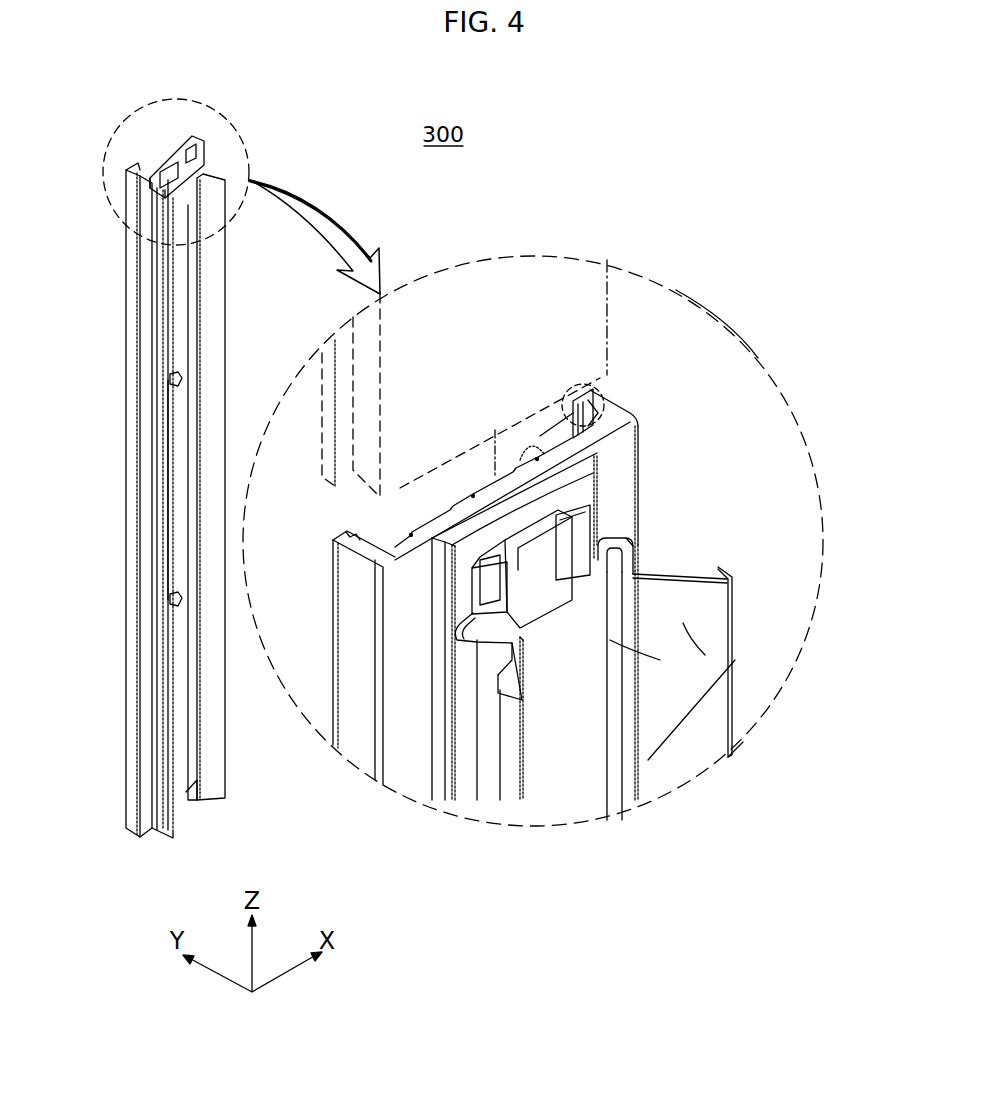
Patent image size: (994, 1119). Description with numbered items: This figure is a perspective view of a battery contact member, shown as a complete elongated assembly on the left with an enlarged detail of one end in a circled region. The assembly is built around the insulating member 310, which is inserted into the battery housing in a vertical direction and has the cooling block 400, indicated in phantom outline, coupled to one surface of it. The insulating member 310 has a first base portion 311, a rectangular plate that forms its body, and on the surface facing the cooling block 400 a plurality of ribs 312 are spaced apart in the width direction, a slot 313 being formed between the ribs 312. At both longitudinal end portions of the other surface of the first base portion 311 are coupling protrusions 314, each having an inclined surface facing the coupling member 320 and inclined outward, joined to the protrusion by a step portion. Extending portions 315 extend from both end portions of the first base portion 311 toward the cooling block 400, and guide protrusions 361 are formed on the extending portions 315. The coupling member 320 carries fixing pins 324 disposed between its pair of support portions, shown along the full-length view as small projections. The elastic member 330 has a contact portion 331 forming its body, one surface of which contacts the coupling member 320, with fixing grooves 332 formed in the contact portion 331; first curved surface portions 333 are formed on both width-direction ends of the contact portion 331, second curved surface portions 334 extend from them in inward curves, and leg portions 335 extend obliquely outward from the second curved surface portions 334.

The insulating member 310 is at (204, 150).
The first base portion 311 is at (600, 462).
The ribs 312 is at (433, 520).
The slot 313 is at (600, 468).
The coupling protrusion 314 is at (530, 872).
The extending portion 315 is at (602, 418).
The coupling member 320 is at (197, 165).
The fixing pin 324 is at (176, 370).
The elastic member 330 is at (240, 705).
The contact portion 331 is at (567, 673).
The fixing groove 332 is at (168, 590).
The first curved surface portion 333 is at (630, 538).
The second curved surface portion 334 is at (610, 640).
The leg portion 335 is at (685, 625).
The guide protrusion 361 is at (600, 385).
The cooling block 400 is at (606, 306).